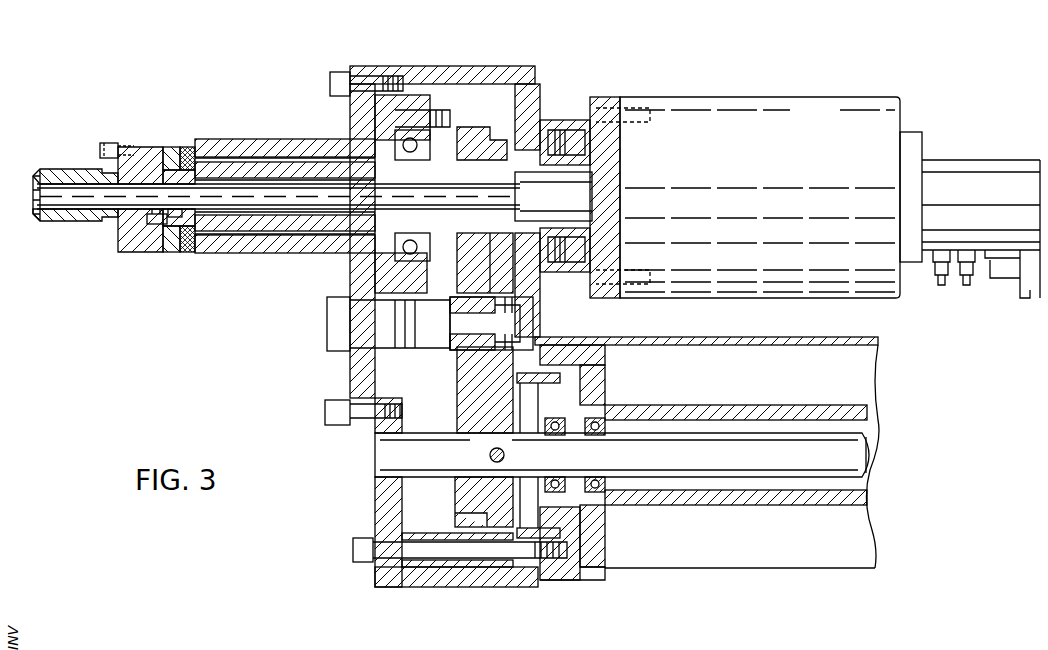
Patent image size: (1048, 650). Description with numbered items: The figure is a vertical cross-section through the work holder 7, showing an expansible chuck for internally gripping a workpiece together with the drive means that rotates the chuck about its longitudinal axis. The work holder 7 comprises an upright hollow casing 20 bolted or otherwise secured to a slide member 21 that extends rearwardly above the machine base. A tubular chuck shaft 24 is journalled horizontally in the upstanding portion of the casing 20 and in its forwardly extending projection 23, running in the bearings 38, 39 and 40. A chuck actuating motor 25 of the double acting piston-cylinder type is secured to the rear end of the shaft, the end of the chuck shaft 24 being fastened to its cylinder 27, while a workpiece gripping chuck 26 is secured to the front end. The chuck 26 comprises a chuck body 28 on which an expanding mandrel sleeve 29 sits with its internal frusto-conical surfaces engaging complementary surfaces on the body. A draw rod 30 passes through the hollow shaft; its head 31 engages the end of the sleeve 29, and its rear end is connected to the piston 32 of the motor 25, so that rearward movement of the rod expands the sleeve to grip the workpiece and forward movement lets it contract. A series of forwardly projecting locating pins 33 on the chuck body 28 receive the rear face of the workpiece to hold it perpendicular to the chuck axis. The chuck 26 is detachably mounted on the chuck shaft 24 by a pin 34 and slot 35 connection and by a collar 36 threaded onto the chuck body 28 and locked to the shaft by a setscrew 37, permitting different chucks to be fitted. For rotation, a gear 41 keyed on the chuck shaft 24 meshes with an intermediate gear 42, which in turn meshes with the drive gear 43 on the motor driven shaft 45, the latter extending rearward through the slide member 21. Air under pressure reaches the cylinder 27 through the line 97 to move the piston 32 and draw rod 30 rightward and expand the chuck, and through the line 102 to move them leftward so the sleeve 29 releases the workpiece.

The work holder 7 is at (431, 61).
The hollow casing 20 is at (486, 66).
The slide member 21 is at (772, 338).
The forwardly extending projection 23 is at (283, 138).
The tubular chuck shaft 24 is at (323, 172).
The chuck actuating motor 25 is at (757, 93).
The workpiece gripping chuck 26 is at (84, 238).
The cylinder 27 is at (690, 100).
The chuck body 28 is at (138, 146).
The expanding mandrel sleeve 29 is at (72, 169).
The draw rod 30 is at (282, 197).
The head 31 is at (34, 195).
The piston 32 is at (605, 190).
The locating pins 33 is at (116, 142).
The pin 34 is at (152, 214).
The slot 35 is at (178, 209).
The collar 36 is at (167, 146).
The setscrew 37 is at (189, 146).
The bearing 38 is at (243, 254).
The bearing 39 is at (409, 233).
The bearing 40 is at (528, 245).
The gear 41 is at (474, 128).
The intermediate gear 42 is at (460, 367).
The drive gear 43 is at (460, 420).
The motor driven shaft 45 is at (440, 477).
The line 97 is at (938, 285).
The line 102 is at (970, 278).